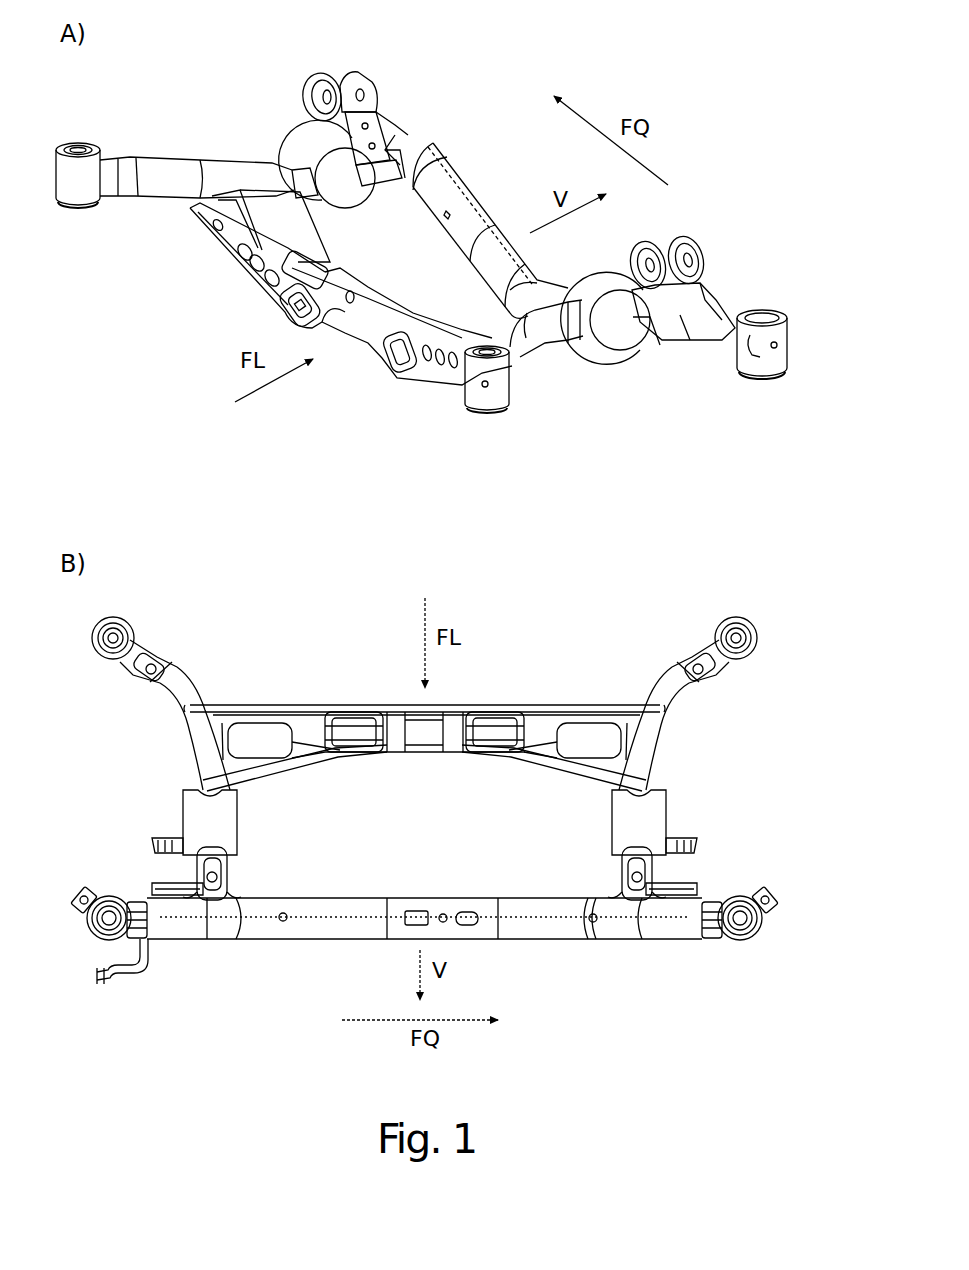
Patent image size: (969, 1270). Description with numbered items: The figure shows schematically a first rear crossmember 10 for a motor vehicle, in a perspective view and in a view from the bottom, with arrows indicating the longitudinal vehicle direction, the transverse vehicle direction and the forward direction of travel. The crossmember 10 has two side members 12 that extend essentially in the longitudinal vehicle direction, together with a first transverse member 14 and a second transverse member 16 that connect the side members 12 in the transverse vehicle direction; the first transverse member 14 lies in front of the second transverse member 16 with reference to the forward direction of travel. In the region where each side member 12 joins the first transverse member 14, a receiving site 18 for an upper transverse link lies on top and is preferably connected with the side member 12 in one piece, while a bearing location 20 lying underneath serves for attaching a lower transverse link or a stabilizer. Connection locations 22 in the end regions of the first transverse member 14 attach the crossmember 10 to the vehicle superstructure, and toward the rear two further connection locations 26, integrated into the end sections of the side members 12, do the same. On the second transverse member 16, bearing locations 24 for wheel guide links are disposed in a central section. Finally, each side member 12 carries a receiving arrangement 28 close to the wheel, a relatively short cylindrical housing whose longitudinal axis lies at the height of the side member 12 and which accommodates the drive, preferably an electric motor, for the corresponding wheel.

The crossmember 10 is at (521, 72).
The side member 12 is at (166, 175).
The first transverse member 14 is at (478, 195).
The second transverse member 16 is at (331, 302).
The receiving site 18 is at (335, 74).
The bearing location 20 is at (234, 876).
The connection location 22 is at (766, 306).
The bearing location 24 is at (268, 320).
The connection location 26 is at (83, 138).
The receiving arrangement 28 is at (350, 183).